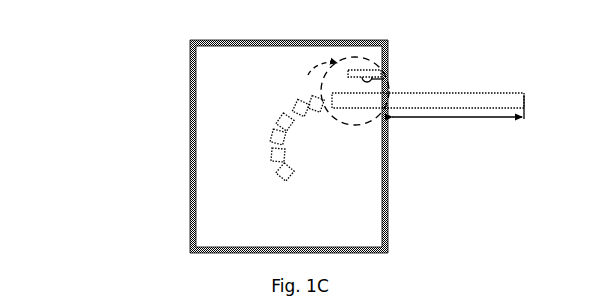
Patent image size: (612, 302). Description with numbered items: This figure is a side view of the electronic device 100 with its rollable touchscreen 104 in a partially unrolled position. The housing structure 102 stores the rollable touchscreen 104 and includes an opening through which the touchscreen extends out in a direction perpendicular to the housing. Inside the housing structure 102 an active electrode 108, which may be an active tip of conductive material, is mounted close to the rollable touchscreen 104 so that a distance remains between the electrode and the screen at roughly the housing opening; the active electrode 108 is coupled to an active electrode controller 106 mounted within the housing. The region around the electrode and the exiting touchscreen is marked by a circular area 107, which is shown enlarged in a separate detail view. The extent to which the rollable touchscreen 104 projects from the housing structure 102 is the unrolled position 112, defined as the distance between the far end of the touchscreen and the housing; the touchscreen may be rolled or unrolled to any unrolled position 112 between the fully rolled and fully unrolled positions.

The electronic device 100 is at (146, 36).
The housing structure 102 is at (190, 104).
The rollable touchscreen 104 is at (374, 112).
The active electrode controller 106 is at (376, 70).
The circular area 107 is at (303, 121).
The active electrode 108 is at (394, 93).
The unrolled position 112 is at (455, 117).